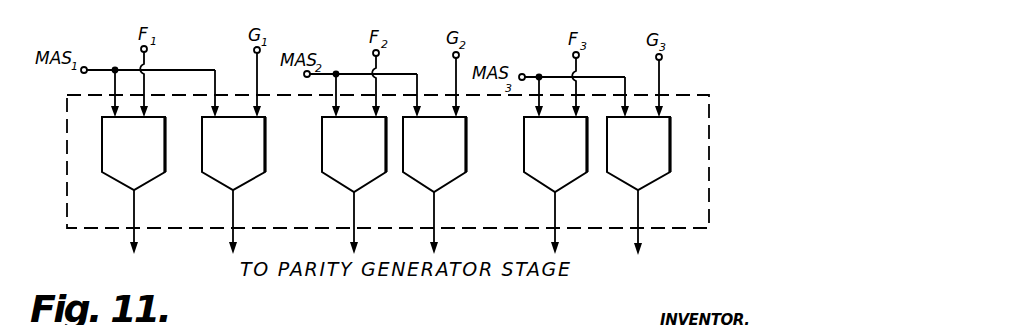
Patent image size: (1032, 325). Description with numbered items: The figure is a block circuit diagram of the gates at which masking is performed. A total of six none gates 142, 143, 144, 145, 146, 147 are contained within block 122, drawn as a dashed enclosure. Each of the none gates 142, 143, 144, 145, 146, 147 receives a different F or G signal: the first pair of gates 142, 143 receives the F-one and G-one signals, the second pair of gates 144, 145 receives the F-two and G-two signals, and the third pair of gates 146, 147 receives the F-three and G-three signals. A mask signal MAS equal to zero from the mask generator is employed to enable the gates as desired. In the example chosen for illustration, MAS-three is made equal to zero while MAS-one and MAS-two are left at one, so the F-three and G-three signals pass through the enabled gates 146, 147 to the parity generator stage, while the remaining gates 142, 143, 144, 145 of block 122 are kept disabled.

The block 122 is at (730, 68).
The none gate 142 is at (126, 187).
The none gate 143 is at (225, 187).
The none gate 144 is at (334, 186).
The none gate 145 is at (419, 190).
The none gate 146 is at (539, 186).
The none gate 147 is at (628, 186).